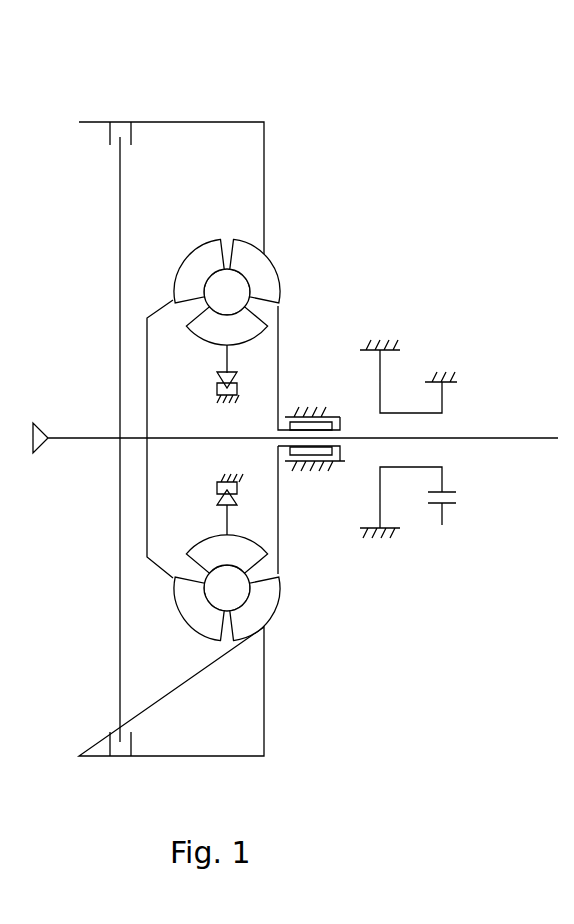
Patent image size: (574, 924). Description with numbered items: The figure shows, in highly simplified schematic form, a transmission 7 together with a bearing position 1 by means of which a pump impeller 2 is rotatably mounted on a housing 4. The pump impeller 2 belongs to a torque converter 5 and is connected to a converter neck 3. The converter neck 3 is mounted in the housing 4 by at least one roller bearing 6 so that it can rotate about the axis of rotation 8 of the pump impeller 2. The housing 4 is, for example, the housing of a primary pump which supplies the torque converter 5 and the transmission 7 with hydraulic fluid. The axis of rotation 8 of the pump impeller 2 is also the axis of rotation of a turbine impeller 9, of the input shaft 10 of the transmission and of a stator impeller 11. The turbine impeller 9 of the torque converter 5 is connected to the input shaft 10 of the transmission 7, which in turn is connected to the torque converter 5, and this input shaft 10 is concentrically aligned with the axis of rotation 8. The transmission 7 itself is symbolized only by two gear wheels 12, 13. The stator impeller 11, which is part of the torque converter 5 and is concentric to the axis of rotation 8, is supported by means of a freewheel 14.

The bearing position 1 is at (336, 465).
The pump impeller 2 is at (275, 263).
The converter neck 3 is at (337, 426).
The housing 4 is at (302, 402).
The torque converter 5 is at (166, 148).
The roller bearing 6 is at (296, 472).
The transmission 7 is at (279, 104).
The axis of rotation 8 is at (483, 437).
The turbine impeller 9 is at (203, 242).
The input shaft 10 is at (540, 440).
The stator impeller 11 is at (203, 327).
The gear wheel 12 is at (447, 373).
The gear wheel 13 is at (446, 508).
The freewheel 14 is at (218, 478).